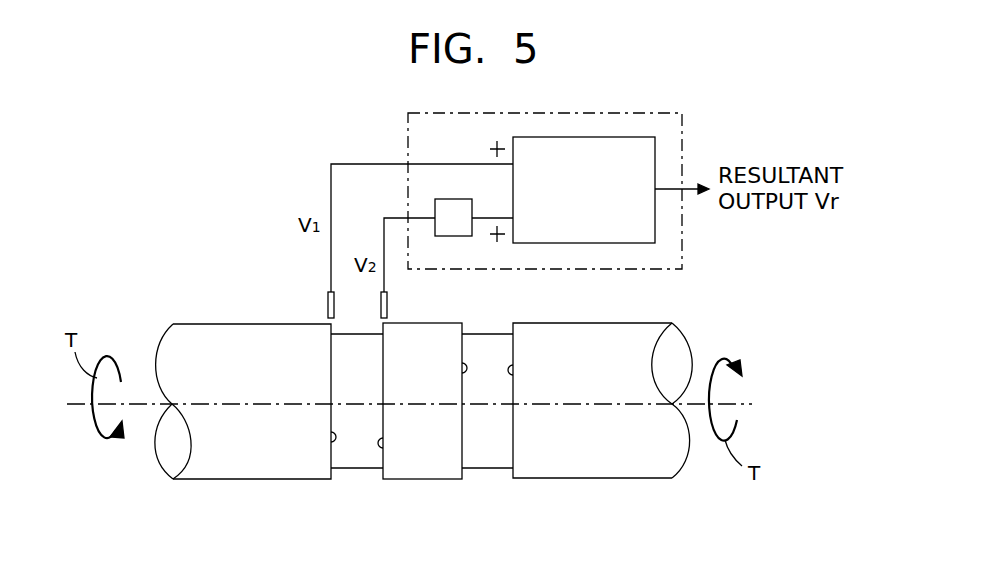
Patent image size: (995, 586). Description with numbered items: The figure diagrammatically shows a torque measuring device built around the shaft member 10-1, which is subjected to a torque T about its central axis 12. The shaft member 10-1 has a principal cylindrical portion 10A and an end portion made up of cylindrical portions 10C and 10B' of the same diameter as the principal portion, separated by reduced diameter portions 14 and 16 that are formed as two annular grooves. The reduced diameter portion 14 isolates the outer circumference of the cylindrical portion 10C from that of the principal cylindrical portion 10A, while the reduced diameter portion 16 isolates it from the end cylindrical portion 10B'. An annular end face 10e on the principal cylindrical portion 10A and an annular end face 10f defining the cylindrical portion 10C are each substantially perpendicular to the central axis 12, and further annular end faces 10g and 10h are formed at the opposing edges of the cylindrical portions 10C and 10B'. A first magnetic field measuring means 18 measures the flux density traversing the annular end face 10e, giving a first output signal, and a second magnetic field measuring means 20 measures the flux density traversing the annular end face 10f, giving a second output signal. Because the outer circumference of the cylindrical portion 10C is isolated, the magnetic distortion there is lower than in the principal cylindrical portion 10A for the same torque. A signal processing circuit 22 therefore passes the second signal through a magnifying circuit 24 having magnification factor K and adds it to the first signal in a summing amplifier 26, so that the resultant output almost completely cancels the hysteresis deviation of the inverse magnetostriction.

The shaft member 10-1 is at (198, 310).
The principal cylindrical portion 10A is at (253, 480).
The end cylindrical portion 10B' is at (602, 430).
The cylindrical portion 10C is at (425, 480).
The annular end face 10e is at (331, 432).
The annular end face 10f is at (383, 438).
The annular end face 10g is at (462, 363).
The annular end face 10h is at (513, 365).
The central axis 12 is at (574, 406).
The reduced diameter portion 14 is at (360, 469).
The reduced diameter portion 16 is at (490, 469).
The first magnetic field measuring means 18 is at (325, 306).
The second magnetic field measuring means 20 is at (388, 304).
The signal processing circuit 22 is at (538, 271).
The magnifying circuit 24 is at (450, 199).
The summing amplifier 26 is at (655, 228).